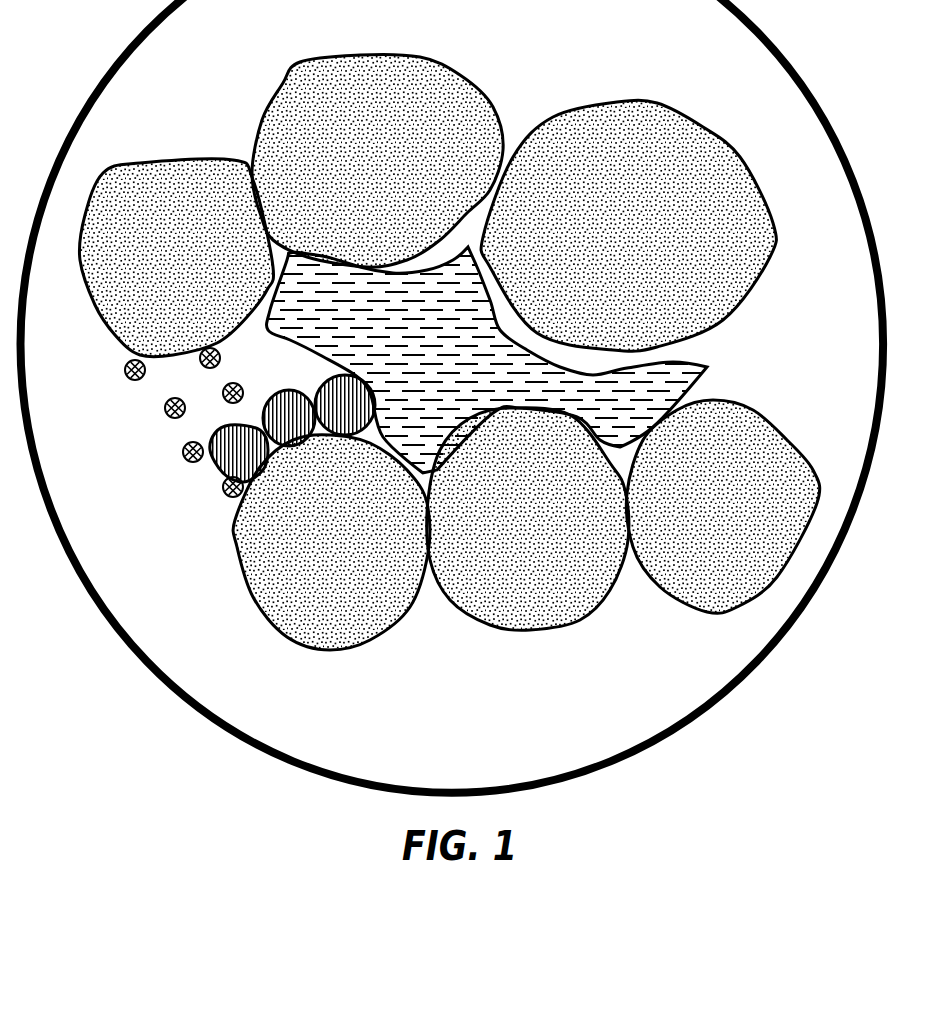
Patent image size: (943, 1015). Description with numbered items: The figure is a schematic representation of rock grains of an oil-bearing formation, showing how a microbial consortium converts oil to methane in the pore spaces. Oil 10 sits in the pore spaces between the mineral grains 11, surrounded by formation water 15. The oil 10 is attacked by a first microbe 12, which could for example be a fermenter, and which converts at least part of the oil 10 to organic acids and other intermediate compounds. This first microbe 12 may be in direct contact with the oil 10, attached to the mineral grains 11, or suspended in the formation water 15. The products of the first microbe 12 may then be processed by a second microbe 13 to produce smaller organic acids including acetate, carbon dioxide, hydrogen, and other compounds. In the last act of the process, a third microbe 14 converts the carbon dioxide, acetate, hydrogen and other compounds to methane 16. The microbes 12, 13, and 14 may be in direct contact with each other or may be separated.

The oil 10 is at (531, 360).
The mineral grains 11 is at (449, 344).
The first microbe 12 is at (322, 378).
The second microbe 13 is at (284, 391).
The third microbe 14 is at (233, 424).
The formation water 15 is at (452, 396).
The methane 16 is at (144, 422).